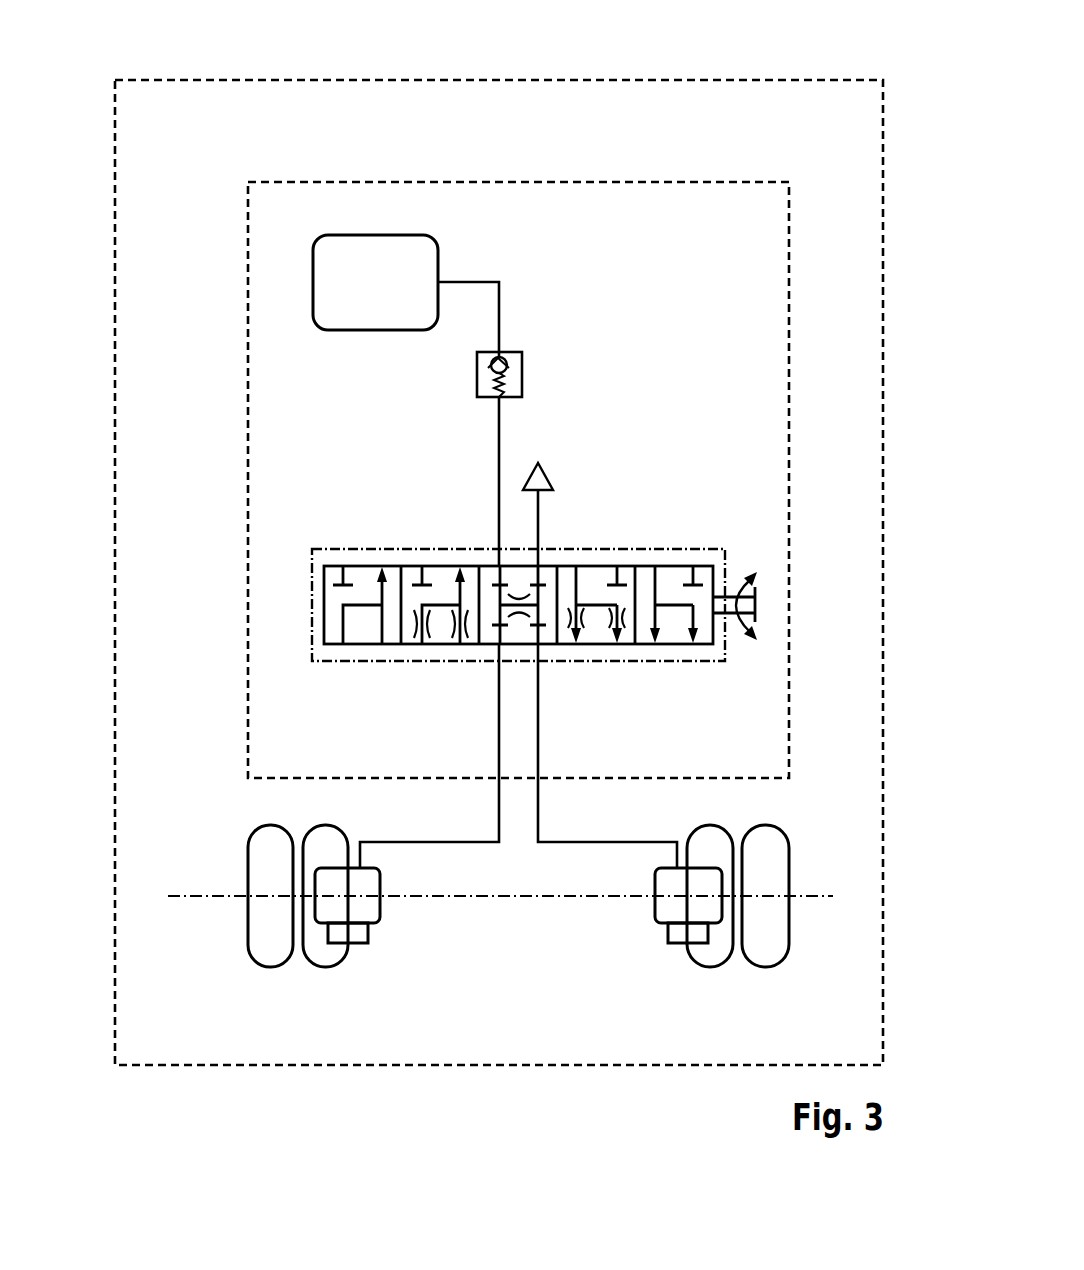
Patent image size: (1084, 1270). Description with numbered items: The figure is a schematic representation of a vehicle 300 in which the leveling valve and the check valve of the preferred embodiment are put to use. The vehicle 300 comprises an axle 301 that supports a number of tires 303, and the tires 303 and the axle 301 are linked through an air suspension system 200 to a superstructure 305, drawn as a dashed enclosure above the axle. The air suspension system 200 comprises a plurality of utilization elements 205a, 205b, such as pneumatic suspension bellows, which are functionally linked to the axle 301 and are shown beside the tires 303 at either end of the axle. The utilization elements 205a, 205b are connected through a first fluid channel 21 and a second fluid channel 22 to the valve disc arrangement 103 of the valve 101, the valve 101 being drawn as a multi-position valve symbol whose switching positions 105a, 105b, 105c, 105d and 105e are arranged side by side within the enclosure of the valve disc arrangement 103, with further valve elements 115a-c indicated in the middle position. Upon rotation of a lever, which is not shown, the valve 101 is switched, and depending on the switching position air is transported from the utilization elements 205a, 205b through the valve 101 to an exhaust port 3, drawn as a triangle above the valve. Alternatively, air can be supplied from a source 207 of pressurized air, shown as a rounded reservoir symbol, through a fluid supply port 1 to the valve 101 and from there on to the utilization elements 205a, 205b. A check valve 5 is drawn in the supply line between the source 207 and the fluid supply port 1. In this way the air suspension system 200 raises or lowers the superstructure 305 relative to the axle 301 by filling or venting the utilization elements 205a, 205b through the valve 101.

The vehicle 300 is at (798, 62).
The superstructure 305 is at (640, 160).
The air suspension system 200 is at (682, 395).
The source of pressurized air 207 is at (438, 262).
The check valve 5 is at (550, 362).
The fluid supply port 1 is at (499, 443).
The exhaust port 3 is at (538, 520).
The valve disc arrangement 103 is at (358, 548).
The valve 101 is at (425, 548).
The first valve position 105a is at (365, 647).
The second valve position 105b is at (442, 647).
The third valve position 105c is at (511, 593).
The fourth valve position 105d is at (595, 647).
The fifth valve position 105e is at (673, 647).
The valve ports 115a-c is at (518, 597).
The second fluid channel 22 is at (497, 812).
The first fluid channel 21 is at (540, 812).
The axle 301 is at (178, 893).
The tires 303 is at (273, 958).
The utilization element 205a is at (637, 925).
The utilization element 205b is at (405, 925).